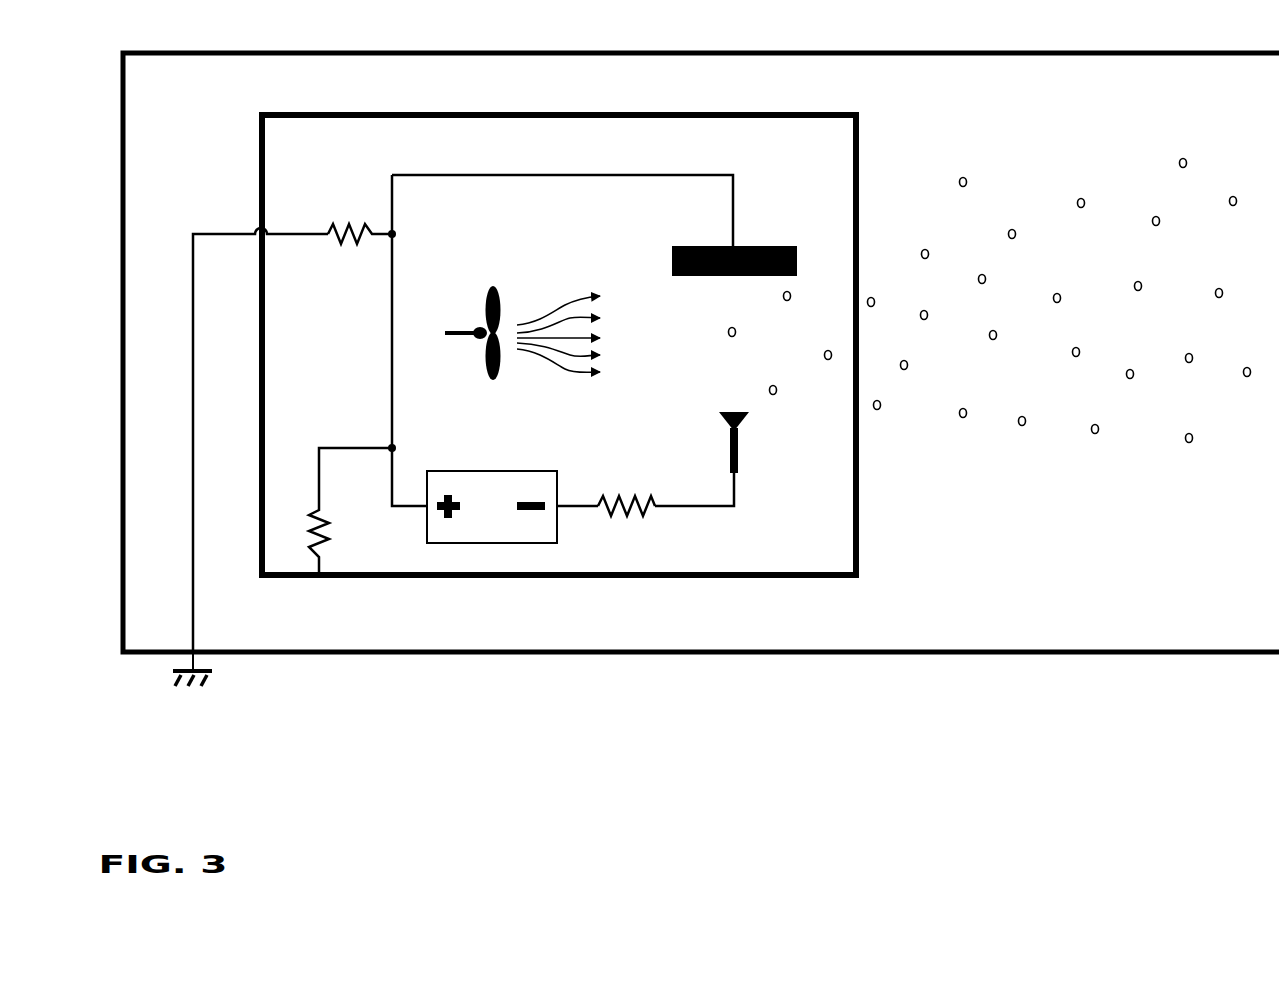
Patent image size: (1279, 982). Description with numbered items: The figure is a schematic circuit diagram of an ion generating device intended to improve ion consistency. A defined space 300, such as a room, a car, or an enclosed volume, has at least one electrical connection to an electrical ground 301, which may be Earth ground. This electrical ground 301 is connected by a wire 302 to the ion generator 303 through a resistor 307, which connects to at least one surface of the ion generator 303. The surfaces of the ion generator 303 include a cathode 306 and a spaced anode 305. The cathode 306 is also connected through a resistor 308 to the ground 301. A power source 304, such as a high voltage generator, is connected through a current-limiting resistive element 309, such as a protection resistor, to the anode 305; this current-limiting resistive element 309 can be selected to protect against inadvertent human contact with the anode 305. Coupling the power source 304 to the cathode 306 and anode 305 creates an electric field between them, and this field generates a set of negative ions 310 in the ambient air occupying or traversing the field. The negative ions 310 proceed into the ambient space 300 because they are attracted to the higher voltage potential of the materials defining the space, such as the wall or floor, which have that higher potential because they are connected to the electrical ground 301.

The defined space 300 is at (502, 658).
The electrical ground 301 is at (155, 673).
The wire 302 is at (177, 423).
The ion generator 303 is at (570, 588).
The power source 304 is at (460, 555).
The anode 305 is at (750, 453).
The cathode 306 is at (768, 237).
The resistor 307 is at (303, 540).
The resistor 308 is at (347, 256).
The current-limiting resistive element 309 is at (630, 528).
The negative ions 310 is at (1170, 323).